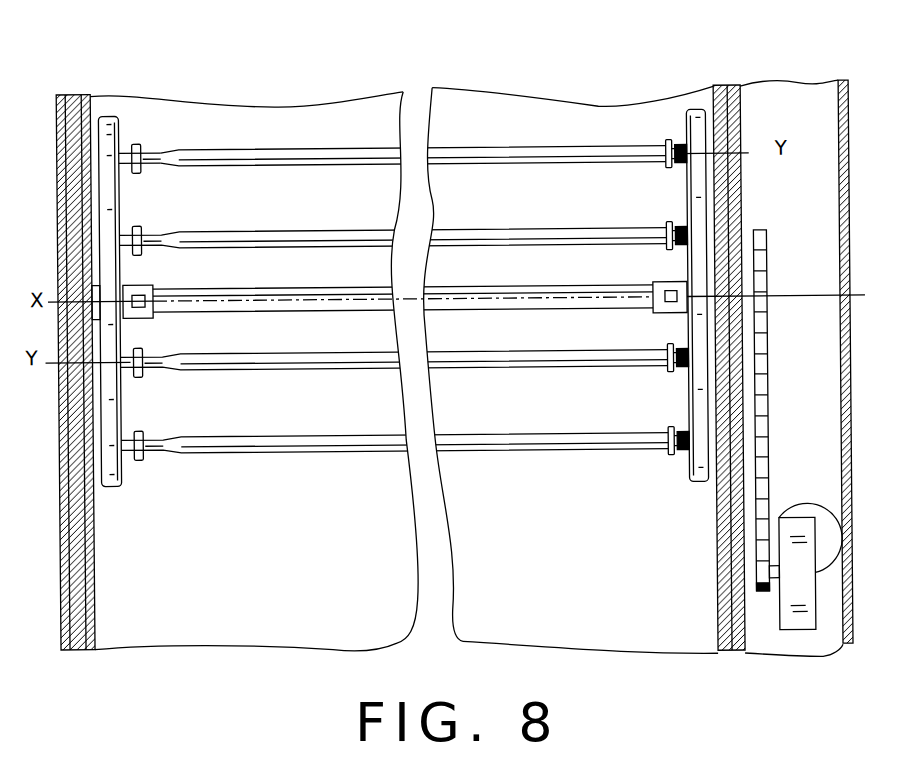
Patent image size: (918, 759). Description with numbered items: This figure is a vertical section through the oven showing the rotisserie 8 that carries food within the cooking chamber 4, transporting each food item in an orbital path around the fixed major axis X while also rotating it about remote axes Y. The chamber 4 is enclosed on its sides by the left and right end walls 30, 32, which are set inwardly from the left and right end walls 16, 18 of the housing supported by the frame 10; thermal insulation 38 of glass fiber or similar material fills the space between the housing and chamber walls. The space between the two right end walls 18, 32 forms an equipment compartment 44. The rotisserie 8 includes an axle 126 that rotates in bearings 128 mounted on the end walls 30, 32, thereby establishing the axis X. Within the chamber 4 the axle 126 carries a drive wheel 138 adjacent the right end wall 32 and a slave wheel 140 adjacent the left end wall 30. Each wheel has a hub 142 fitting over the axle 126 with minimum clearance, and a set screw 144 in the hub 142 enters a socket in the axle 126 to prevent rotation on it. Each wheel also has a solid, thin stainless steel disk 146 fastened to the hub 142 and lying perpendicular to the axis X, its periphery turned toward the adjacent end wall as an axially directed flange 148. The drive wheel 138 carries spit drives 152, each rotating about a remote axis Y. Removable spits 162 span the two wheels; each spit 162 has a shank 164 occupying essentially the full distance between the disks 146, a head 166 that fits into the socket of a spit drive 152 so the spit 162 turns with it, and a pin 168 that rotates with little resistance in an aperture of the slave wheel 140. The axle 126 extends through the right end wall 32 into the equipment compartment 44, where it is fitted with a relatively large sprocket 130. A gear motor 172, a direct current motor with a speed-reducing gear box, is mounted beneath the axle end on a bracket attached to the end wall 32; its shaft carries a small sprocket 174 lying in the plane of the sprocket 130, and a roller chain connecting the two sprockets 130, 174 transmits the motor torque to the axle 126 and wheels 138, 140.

The cooking chamber 4 is at (308, 617).
The rotisserie 8 is at (307, 470).
The frame 10 is at (689, 108).
The left end wall 16 is at (60, 625).
The right end wall 18 is at (852, 443).
The left end wall 30 is at (95, 617).
The right end wall 32 is at (718, 624).
The thermal insulation 38 is at (78, 652).
The equipment compartment 44 is at (824, 392).
The axle 126 is at (523, 230).
The bearings 128 is at (99, 283).
The sprocket 130 is at (768, 322).
The drive wheel 138 is at (688, 472).
The slave wheel 140 is at (120, 473).
The hub 142 is at (128, 285).
The set screw 144 is at (142, 297).
The disk 146 is at (122, 400).
The flange 148 is at (111, 126).
The spit drive 152 is at (670, 460).
The spit 162 is at (307, 147).
The shank 164 is at (485, 148).
The head 166 is at (675, 147).
The pin 168 is at (150, 156).
The gear motor 172 is at (815, 590).
The sprocket 174 is at (773, 580).